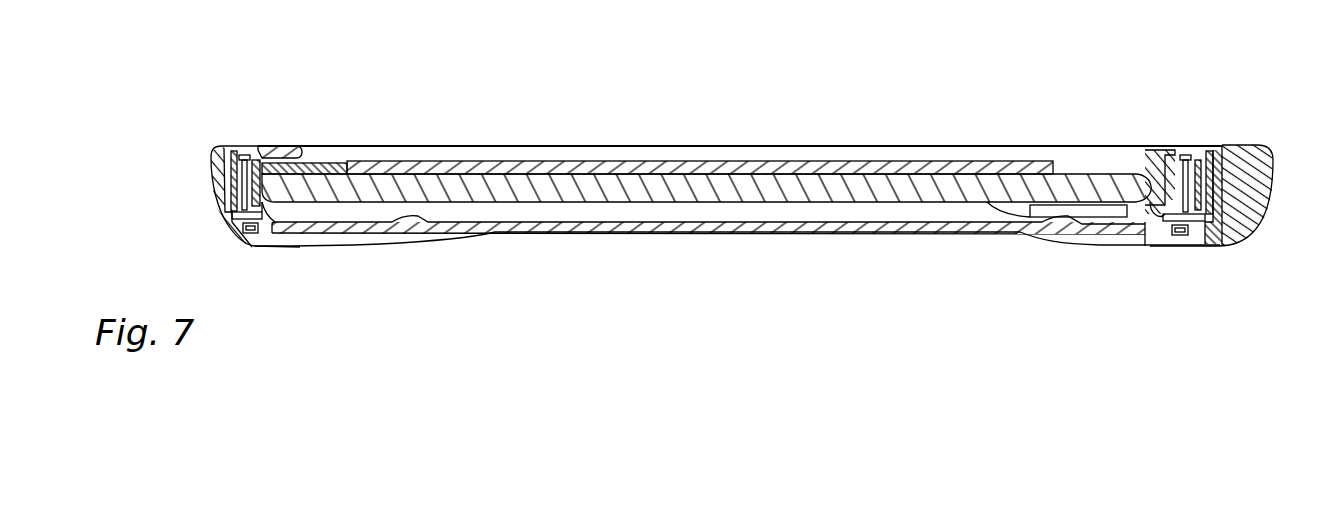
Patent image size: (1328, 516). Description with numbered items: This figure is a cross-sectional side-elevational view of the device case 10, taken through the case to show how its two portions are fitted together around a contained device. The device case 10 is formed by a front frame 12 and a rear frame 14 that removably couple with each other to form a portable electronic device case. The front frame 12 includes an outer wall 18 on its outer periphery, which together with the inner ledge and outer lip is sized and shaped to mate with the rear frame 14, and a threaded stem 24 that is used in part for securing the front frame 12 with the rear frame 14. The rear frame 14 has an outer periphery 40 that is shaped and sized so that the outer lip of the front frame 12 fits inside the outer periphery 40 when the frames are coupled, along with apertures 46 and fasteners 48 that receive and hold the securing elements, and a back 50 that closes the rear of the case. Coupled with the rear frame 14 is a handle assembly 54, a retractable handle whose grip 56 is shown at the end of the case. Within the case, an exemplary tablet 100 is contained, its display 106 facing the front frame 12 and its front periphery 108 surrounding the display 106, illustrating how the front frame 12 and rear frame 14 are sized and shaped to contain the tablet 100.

The device case 10 is at (200, 38).
The front frame 12 is at (1135, 115).
The rear frame 14 is at (1012, 297).
The outer wall 18 is at (300, 157).
The threaded stem 24 is at (244, 165).
The outer periphery 40 is at (213, 175).
The apertures 46 is at (243, 225).
The fasteners 48 is at (245, 236).
The back 50 is at (772, 262).
The handle assembly 54 is at (1287, 228).
The grip 56 is at (1250, 145).
The tablet 100 is at (462, 190).
The display 106 is at (531, 162).
The front periphery 108 is at (337, 165).